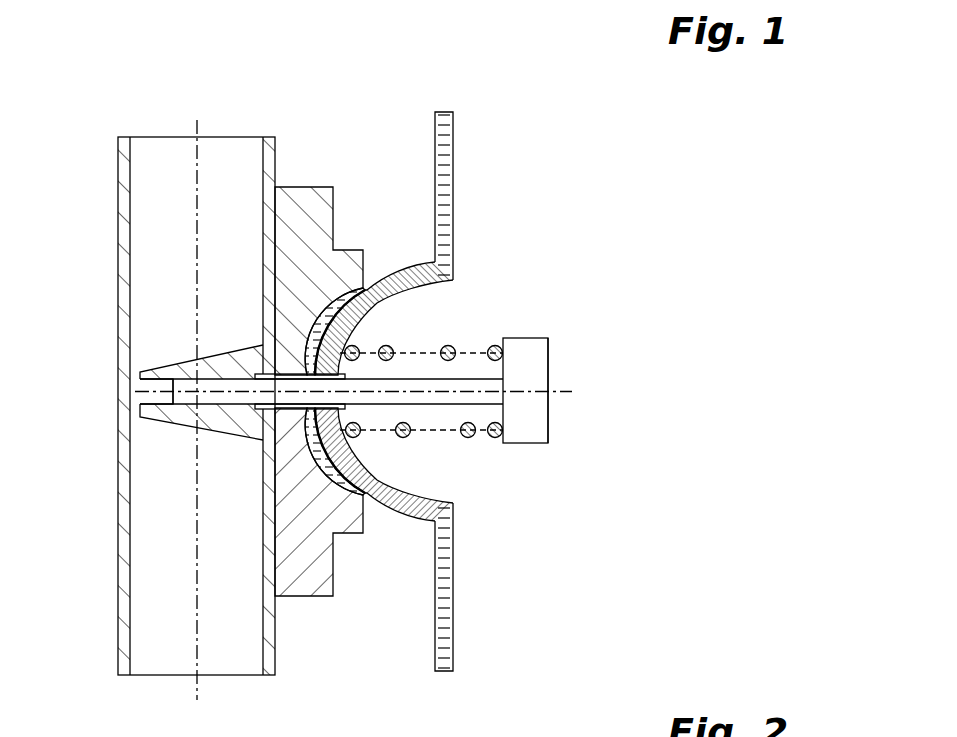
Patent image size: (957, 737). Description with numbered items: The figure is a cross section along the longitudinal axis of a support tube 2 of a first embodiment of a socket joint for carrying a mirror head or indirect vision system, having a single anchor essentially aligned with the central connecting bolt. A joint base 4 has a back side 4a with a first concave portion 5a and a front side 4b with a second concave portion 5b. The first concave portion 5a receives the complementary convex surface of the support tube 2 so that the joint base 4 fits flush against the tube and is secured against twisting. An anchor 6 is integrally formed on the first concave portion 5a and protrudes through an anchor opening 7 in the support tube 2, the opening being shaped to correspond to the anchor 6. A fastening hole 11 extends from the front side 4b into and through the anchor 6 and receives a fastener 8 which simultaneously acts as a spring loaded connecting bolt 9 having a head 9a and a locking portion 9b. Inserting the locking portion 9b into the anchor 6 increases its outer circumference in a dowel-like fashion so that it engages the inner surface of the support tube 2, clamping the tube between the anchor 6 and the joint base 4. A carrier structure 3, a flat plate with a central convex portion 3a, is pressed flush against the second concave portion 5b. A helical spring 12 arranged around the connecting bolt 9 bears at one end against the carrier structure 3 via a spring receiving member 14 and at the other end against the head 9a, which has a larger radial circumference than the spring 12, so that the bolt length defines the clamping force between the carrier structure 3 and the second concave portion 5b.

The support tube 2 is at (272, 623).
The carrier structure 3 is at (458, 596).
The convex portion 3a is at (438, 391).
The joint base 4 is at (344, 336).
The back side 4a is at (276, 188).
The front side 4b is at (368, 515).
The first concave portion 5a is at (334, 312).
The second concave portion 5b is at (350, 300).
The anchor 6 is at (215, 355).
The anchor opening 7 is at (317, 348).
The fastener 8 is at (317, 383).
The spring loaded connecting bolt 9 is at (587, 368).
The head 9a is at (533, 423).
The locking portion 9b is at (163, 420).
The fastening hole 11 is at (163, 388).
The helical spring 12 is at (452, 350).
The spring receiving member 14 is at (380, 460).